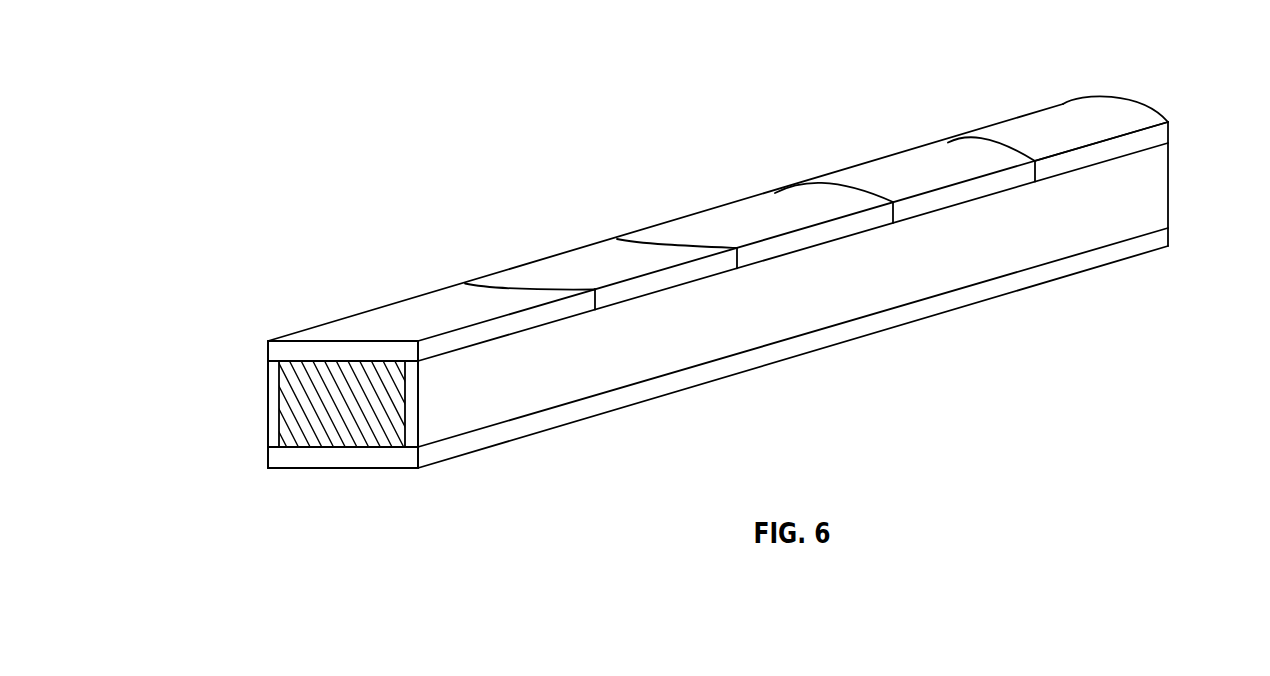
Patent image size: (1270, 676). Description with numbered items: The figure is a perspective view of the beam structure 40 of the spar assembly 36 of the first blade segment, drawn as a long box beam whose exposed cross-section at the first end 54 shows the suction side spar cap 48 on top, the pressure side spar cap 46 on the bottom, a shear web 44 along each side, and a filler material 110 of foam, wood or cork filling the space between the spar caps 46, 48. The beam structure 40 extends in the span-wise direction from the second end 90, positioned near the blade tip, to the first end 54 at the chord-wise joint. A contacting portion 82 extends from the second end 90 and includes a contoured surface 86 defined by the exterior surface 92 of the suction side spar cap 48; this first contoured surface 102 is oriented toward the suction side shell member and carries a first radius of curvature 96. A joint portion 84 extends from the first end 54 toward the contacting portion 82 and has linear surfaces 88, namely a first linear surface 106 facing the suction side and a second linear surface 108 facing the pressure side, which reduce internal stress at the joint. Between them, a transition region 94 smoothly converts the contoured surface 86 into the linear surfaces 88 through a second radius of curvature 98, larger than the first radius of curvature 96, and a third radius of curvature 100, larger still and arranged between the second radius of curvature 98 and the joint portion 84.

The spar assembly 36 is at (223, 115).
The beam structure 40 is at (438, 77).
The shear web 44 is at (267, 395).
The pressure side spar cap 46 is at (352, 455).
The suction side spar cap 48 is at (293, 352).
The first end 54 is at (405, 500).
The contacting portion 82 is at (1146, 303).
The joint portion 84 is at (528, 470).
The contoured surface 86 is at (1138, 115).
The linear surface 88 is at (432, 310).
The second end 90 is at (1207, 185).
The exterior surface 92 is at (1040, 137).
The transition region 94 is at (686, 155).
The first radius of curvature 96 is at (978, 138).
The second radius of curvature 98 is at (833, 182).
The third radius of curvature 100 is at (648, 242).
The first contoured surface 102 is at (1012, 143).
The first linear surface 106 is at (352, 328).
The second linear surface 108 is at (310, 468).
The filler material 110 is at (388, 423).